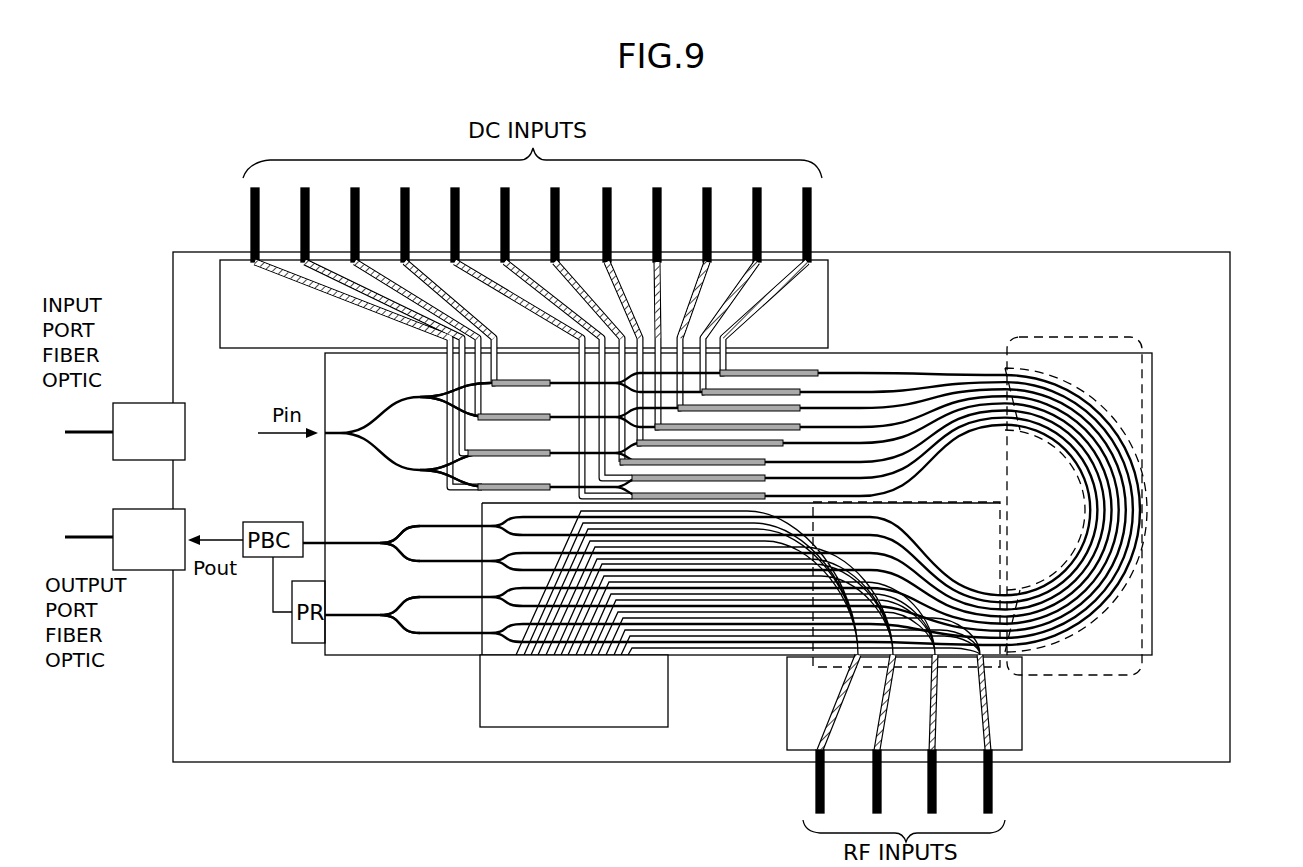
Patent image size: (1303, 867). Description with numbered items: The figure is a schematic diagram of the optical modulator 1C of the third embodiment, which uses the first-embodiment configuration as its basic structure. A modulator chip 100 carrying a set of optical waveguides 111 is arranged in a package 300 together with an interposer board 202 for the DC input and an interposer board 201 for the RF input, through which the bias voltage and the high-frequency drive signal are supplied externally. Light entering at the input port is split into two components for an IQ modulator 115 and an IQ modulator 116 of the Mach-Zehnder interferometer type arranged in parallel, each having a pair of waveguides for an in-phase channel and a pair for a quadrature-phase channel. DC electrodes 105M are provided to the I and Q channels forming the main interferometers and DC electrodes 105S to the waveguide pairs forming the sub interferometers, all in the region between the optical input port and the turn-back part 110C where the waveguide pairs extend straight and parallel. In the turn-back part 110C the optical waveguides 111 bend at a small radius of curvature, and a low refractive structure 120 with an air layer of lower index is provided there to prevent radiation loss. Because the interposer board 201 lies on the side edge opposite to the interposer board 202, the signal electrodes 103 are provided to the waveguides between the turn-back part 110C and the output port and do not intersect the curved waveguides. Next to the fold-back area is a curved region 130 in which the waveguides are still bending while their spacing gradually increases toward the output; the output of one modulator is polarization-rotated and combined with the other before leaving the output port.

The optical modulator 1C is at (1205, 104).
The package 300 is at (1165, 252).
The interposer board 202 is at (220, 305).
The modulator chip 100 is at (963, 353).
The optical waveguides 111 is at (913, 372).
The IQ modulator 115 is at (404, 380).
The IQ modulator 116 is at (406, 490).
The DC electrodes 105M is at (468, 434).
The DC electrodes 105S is at (805, 372).
The low refractive structure 120 is at (1085, 400).
The turn-back part 110C is at (1110, 675).
The signal electrodes 103 is at (695, 655).
The curved region 130 is at (813, 667).
The interposer board 201 is at (1022, 703).